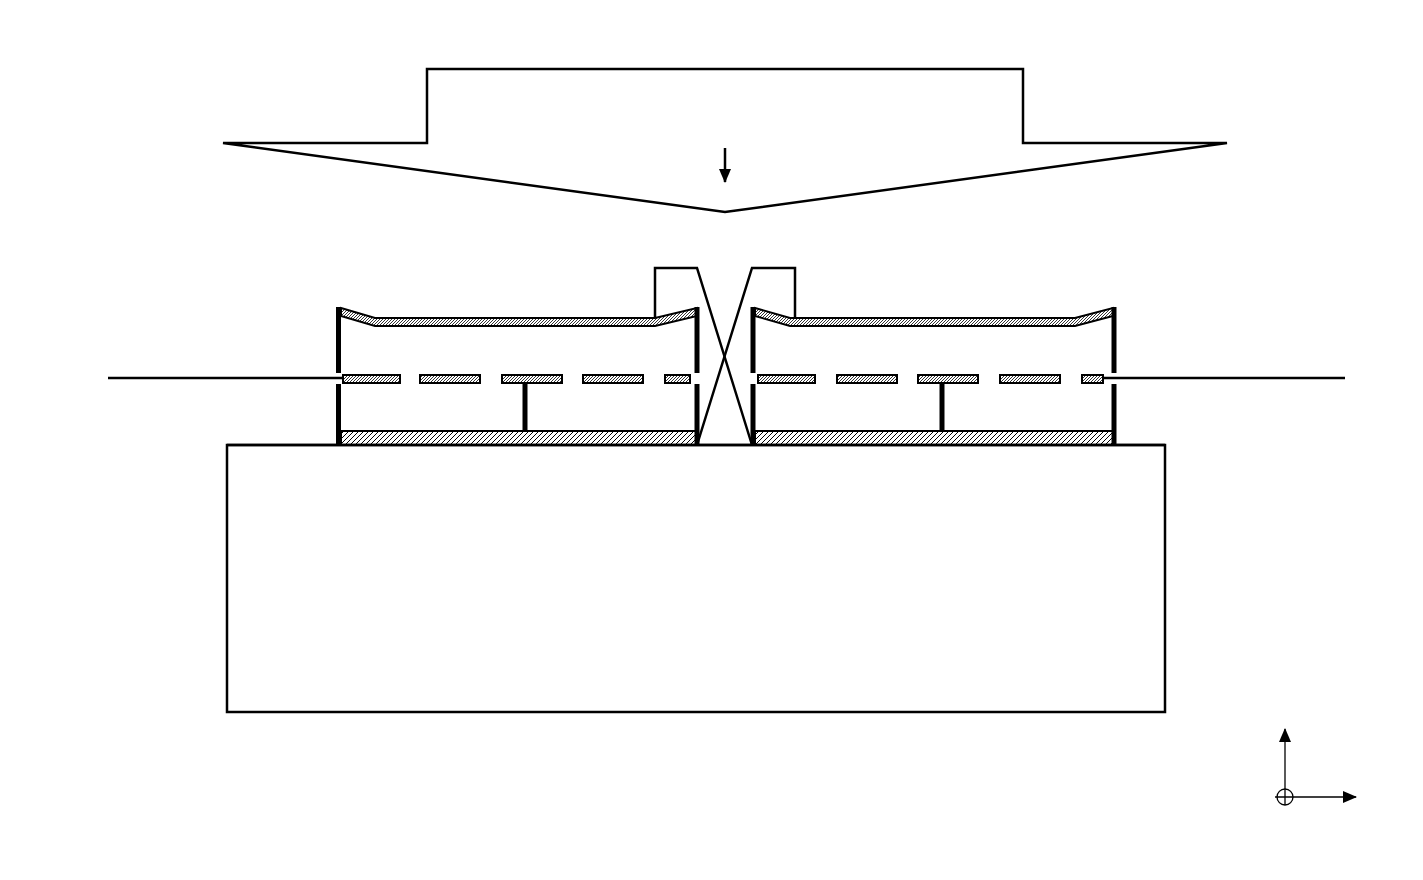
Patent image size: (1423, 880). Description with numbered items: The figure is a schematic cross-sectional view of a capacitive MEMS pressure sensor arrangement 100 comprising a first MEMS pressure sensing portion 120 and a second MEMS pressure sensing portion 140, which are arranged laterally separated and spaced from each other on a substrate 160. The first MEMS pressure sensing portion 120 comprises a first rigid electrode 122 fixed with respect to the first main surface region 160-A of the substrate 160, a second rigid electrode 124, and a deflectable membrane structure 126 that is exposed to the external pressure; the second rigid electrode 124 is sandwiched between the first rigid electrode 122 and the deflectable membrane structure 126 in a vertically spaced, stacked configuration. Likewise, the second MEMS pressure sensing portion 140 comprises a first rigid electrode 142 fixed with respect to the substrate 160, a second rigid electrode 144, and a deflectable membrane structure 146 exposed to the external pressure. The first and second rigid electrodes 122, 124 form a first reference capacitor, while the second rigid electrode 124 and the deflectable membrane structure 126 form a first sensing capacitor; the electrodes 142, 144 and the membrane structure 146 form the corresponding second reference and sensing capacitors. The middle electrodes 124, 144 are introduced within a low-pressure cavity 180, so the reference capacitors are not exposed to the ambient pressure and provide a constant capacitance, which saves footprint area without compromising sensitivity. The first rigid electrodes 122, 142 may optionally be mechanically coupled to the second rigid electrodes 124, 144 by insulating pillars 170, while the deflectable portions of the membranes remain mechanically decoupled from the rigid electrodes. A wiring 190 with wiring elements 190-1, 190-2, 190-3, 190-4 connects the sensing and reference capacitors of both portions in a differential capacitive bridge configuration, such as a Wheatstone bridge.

The capacitive MEMS pressure sensor arrangement 100 is at (78, 87).
The first MEMS pressure sensing portion 120 is at (703, 256).
The second MEMS pressure sensing portion 140 is at (1122, 256).
The first rigid electrode 122 is at (334, 438).
The second rigid electrode 124 is at (377, 372).
The deflectable membrane structure 126 is at (334, 308).
The first rigid electrode 142 is at (1122, 438).
The second rigid electrode 144 is at (1045, 372).
The deflectable membrane structure 146 is at (1120, 309).
The substrate 160 is at (1165, 575).
The first main surface region 160-A is at (1150, 452).
The insulating pillar 170 is at (521, 412).
The low-pressure cavity 180 is at (457, 352).
The wiring 190 is at (108, 683).
The wiring element 190-1 is at (163, 376).
The wiring element 190-2 is at (654, 289).
The wiring element 190-3 is at (797, 283).
The wiring element 190-4 is at (1275, 376).